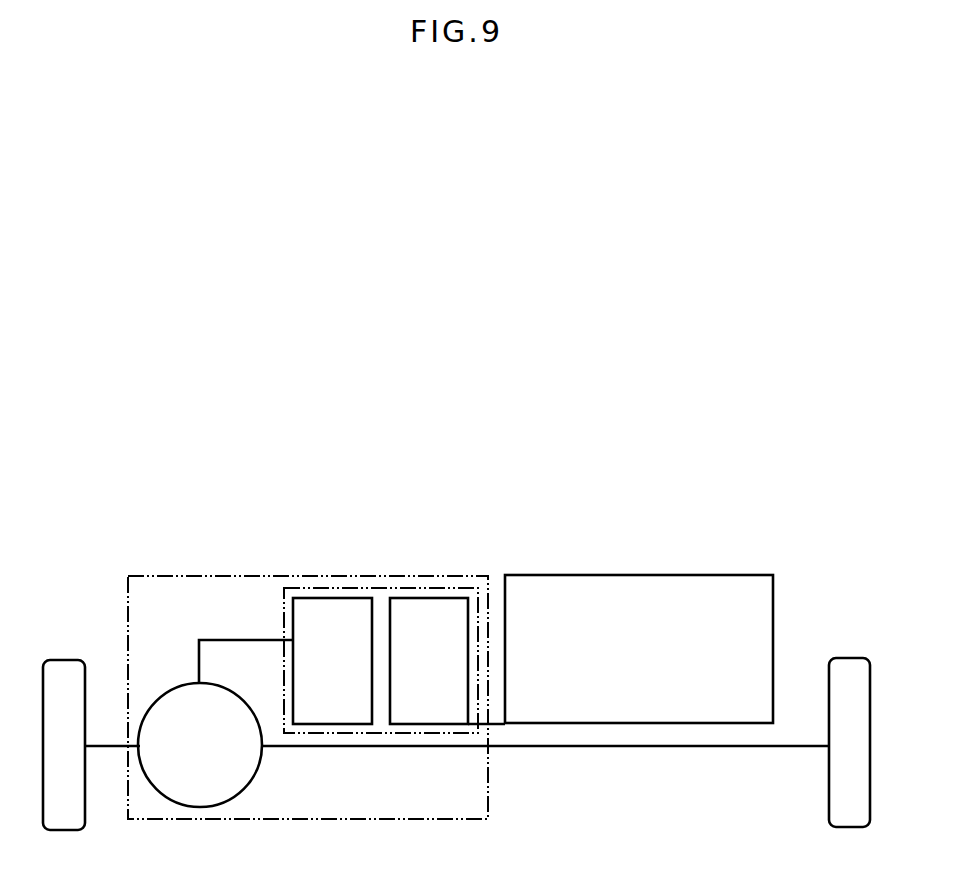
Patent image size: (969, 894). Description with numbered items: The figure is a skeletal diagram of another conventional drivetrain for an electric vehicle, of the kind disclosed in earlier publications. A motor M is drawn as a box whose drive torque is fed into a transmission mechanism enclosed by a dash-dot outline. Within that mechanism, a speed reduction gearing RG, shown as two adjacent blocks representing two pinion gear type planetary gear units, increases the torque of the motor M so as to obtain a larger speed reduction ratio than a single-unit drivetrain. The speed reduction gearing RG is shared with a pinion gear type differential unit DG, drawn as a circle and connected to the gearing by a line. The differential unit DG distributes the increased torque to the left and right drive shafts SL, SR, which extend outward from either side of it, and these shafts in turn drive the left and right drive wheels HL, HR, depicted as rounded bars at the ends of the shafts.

The speed reduction gearing RG is at (425, 588).
The differential unit DG is at (184, 683).
The motor M is at (639, 649).
The left drive wheel HL is at (66, 660).
The right drive wheel HR is at (850, 658).
The left drive shaft SL is at (115, 748).
The right drive shaft SR is at (634, 747).